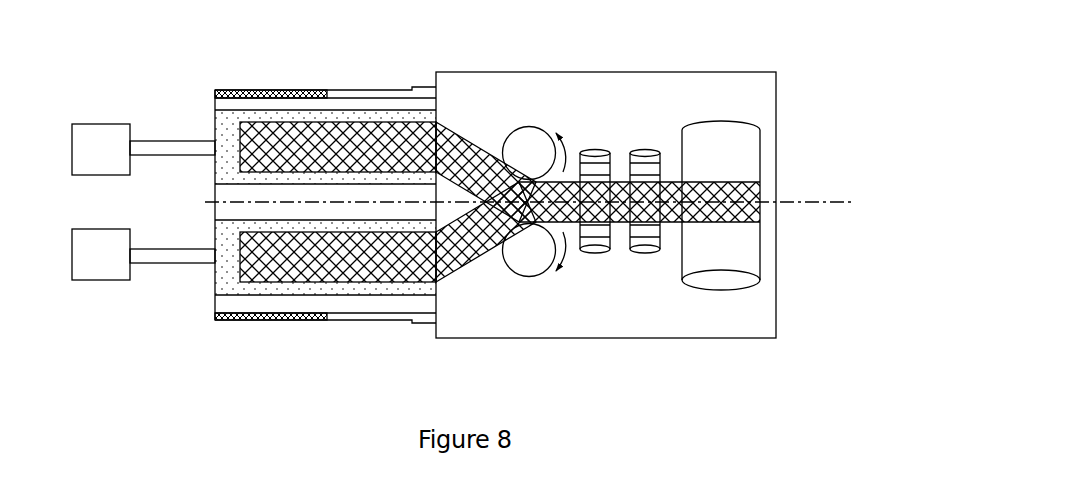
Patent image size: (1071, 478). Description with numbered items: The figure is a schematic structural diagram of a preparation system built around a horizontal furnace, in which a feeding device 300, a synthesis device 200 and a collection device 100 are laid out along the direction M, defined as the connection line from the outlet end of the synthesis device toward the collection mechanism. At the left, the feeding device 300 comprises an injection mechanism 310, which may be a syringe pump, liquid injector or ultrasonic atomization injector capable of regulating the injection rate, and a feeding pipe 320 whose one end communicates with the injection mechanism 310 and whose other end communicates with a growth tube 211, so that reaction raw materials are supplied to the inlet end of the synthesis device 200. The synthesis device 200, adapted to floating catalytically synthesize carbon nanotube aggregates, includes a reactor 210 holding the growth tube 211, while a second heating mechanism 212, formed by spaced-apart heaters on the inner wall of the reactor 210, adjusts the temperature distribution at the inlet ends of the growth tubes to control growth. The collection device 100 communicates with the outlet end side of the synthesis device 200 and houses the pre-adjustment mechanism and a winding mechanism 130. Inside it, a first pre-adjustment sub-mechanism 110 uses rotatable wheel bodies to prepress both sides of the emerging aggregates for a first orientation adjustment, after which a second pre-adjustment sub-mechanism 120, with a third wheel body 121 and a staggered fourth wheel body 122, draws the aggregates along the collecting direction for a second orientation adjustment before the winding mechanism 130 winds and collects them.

The collection device 100 is at (788, 76).
The first pre-adjustment sub-mechanism 110 is at (533, 290).
The second pre-adjustment sub-mechanism 120 is at (631, 203).
The third wheel body 121 is at (595, 150).
The fourth wheel body 122 is at (645, 150).
The winding mechanism 130 is at (731, 298).
The synthesis device 200 is at (318, 72).
The reactor 210 is at (403, 325).
The growth tube 211 is at (345, 297).
The second heating mechanism 212 is at (270, 322).
The feeding device 300 is at (128, 90).
The injection mechanism 310 is at (92, 280).
The feeding pipe 320 is at (168, 262).
The direction M is at (538, 202).